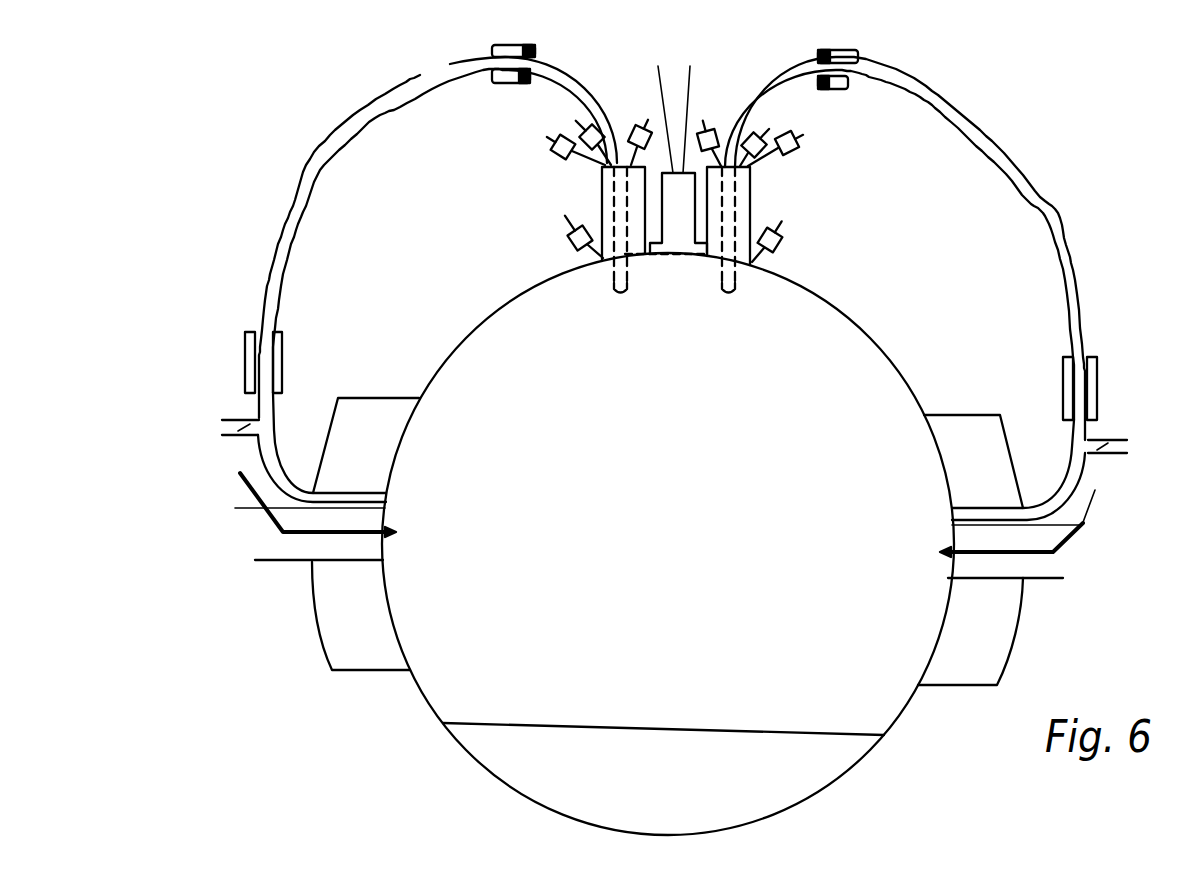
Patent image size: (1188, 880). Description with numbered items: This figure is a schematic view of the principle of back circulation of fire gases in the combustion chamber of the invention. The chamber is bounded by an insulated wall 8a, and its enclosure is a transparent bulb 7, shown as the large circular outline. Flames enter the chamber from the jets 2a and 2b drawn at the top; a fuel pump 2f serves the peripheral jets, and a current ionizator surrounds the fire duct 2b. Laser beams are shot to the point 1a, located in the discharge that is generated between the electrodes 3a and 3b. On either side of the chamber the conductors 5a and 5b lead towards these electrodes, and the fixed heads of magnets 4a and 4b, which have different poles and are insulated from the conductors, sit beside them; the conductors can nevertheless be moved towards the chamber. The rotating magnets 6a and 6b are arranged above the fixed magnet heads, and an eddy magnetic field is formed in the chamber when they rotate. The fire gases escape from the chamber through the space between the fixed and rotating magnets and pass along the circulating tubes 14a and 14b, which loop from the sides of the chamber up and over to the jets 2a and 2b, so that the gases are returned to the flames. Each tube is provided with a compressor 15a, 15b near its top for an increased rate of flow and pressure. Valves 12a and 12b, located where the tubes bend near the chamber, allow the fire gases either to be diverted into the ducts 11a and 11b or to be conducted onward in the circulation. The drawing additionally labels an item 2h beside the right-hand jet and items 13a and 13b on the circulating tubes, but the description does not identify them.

The laser beam target 1a is at (666, 160).
The jet 2a is at (617, 252).
The jet 2b is at (738, 253).
The fuel pump for peripheral jets 2f is at (798, 144).
The tube connection fitting 2h is at (787, 239).
The electrode 3a is at (377, 602).
The electrode 3b is at (958, 616).
The fixed head of magnet 4a is at (291, 548).
The fixed head of magnet 4b is at (1037, 568).
The conductor 5a is at (290, 500).
The conductor 5b is at (1041, 520).
The rotating magnet 6a is at (366, 445).
The rotating magnet 6b is at (973, 461).
The transparent bulb 7 is at (663, 788).
The insulated wall 8a is at (668, 544).
The duct 11a is at (214, 423).
The duct 11b is at (1137, 443).
The valve 12a is at (261, 412).
The valve 12b is at (1084, 430).
The left clamp 13a is at (286, 362).
The right clamp 13b is at (1054, 388).
The circulating tube 14a is at (436, 237).
The circulating tube 14b is at (905, 248).
The compressor 15a is at (489, 51).
The compressor 15b is at (865, 57).